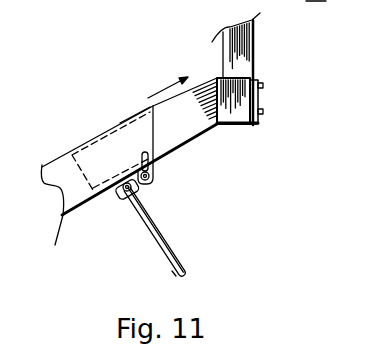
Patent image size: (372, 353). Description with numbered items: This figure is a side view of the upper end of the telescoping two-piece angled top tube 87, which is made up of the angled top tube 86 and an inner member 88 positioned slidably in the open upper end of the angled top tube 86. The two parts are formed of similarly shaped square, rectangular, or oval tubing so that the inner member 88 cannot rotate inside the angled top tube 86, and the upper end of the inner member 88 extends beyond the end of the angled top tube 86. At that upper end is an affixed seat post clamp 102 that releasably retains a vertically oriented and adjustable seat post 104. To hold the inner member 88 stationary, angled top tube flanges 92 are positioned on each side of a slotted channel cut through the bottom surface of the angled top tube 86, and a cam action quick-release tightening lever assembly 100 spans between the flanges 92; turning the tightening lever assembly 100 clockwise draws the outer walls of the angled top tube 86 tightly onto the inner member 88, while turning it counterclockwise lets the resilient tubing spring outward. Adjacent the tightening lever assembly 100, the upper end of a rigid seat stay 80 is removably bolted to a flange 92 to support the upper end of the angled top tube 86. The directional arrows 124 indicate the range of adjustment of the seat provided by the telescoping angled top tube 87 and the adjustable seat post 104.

The seat stay 80 is at (152, 220).
The angled top tube 86 is at (43, 166).
The two-piece angled top tube 87 is at (134, 110).
The inner member 88 is at (110, 150).
The angled top tube flange 92 is at (115, 196).
The tightening lever assembly 100 is at (150, 160).
The seat post clamp 102 is at (258, 95).
The seat post 104 is at (254, 46).
The directional arrows 124 is at (157, 94).